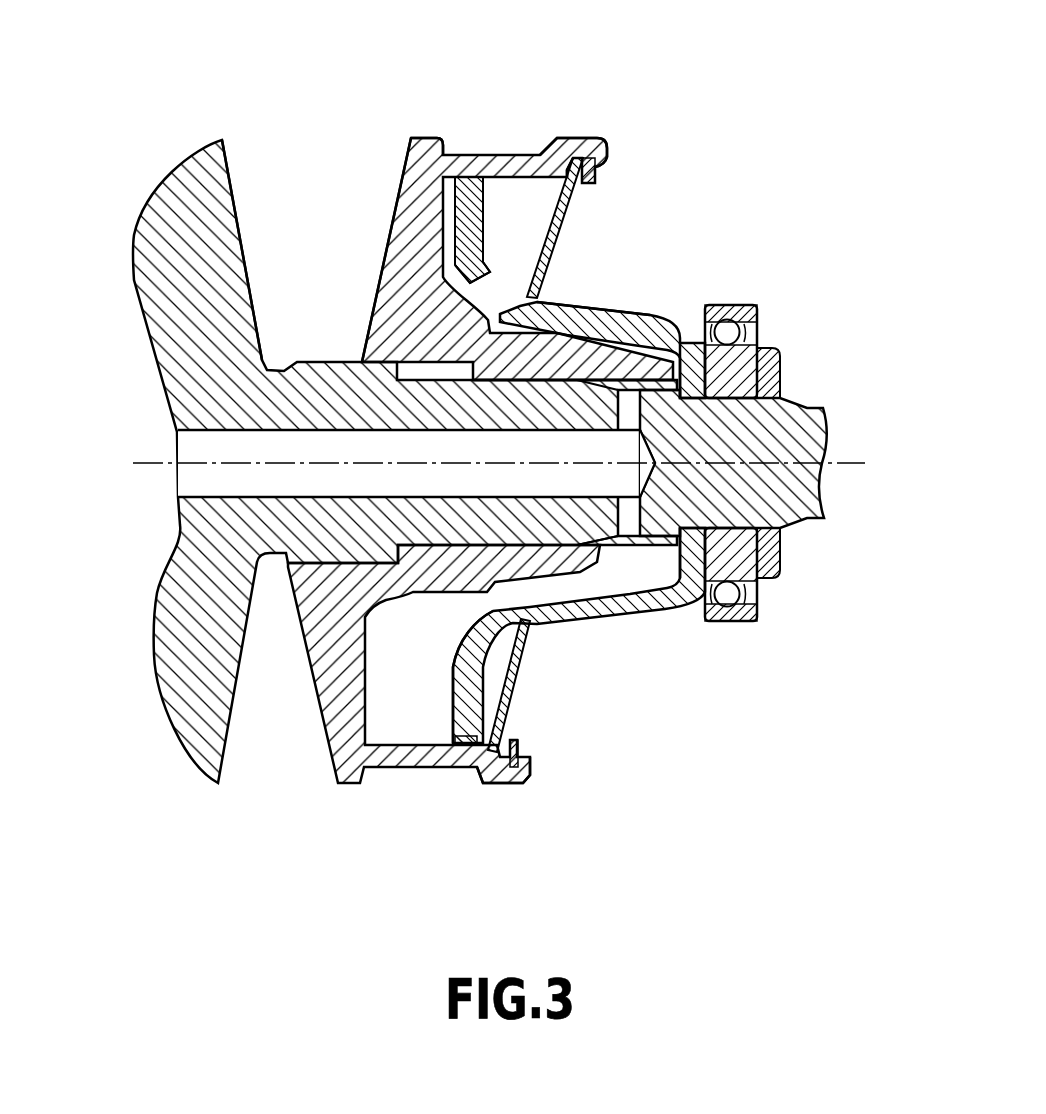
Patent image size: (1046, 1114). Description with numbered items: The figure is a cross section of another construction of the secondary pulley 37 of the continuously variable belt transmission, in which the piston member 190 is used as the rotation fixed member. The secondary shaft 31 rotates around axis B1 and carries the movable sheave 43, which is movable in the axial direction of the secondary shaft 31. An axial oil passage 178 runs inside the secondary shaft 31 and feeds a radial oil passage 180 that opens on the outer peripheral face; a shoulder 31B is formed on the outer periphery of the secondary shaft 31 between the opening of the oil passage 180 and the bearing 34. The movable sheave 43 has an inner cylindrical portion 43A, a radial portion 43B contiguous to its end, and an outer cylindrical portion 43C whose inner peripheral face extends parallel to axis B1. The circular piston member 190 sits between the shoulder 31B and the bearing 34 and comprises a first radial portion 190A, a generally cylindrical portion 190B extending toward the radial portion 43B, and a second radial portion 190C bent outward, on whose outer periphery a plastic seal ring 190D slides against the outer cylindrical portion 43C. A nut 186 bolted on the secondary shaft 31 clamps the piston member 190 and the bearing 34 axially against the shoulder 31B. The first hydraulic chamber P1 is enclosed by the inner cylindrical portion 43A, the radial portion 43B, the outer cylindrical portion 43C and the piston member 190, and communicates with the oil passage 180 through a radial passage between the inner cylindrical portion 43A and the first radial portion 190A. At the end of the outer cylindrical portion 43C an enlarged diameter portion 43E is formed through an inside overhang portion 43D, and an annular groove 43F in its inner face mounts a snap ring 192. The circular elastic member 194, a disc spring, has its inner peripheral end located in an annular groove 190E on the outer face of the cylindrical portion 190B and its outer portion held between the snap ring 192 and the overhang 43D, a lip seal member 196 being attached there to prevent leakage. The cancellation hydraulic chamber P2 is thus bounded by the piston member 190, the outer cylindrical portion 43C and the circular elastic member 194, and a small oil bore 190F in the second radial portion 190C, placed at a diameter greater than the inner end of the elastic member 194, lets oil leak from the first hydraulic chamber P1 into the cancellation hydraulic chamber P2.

The secondary shaft 31 is at (810, 423).
The shoulder 31B is at (682, 550).
The bearing 34 is at (760, 303).
The secondary pulley 37 is at (290, 97).
The movable sheave 43 is at (398, 167).
The inner cylindrical portion 43A is at (503, 360).
The radial portion 43B is at (396, 216).
The outer cylindrical portion 43C is at (452, 151).
The inside overhang portion 43D is at (510, 717).
The enlarged diameter portion 43E is at (573, 137).
The annular groove 43F is at (609, 153).
The oil passage 178 is at (183, 448).
The oil passage 180 is at (620, 435).
The nut 186 is at (773, 560).
The piston member 190 is at (665, 310).
The first radial portion 190A is at (732, 372).
The generally cylindrical portion 190B is at (593, 306).
The second radial portion 190C is at (486, 204).
The seal ring 190D is at (458, 730).
The annular groove 190E is at (485, 613).
The oil bore 190F is at (457, 265).
The snap ring 192 is at (596, 172).
The circular elastic member 194 is at (572, 208).
The seal member 196 is at (578, 160).
The axis B1 is at (862, 464).
The first hydraulic chamber P1 is at (424, 702).
The cancellation hydraulic chamber P2 is at (537, 234).